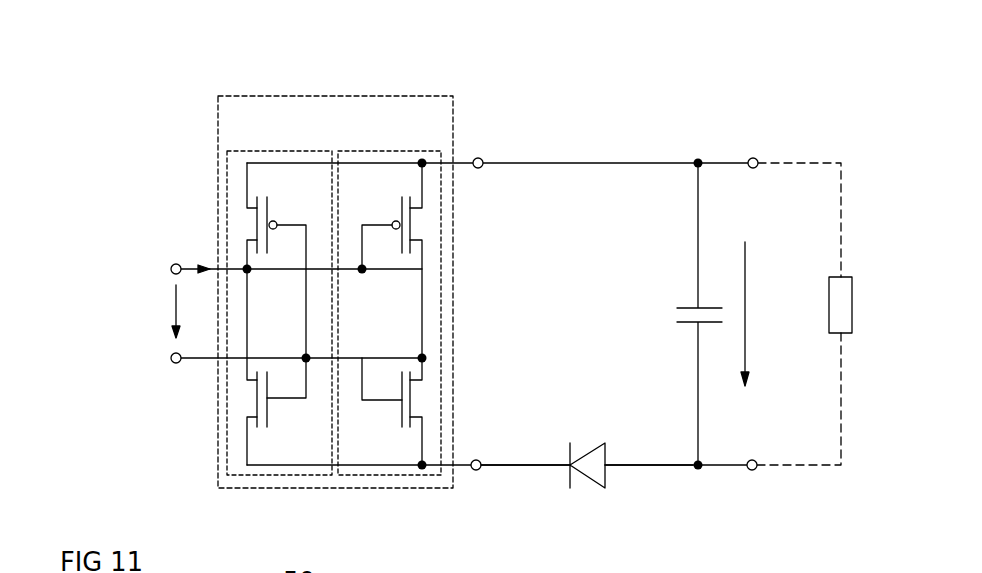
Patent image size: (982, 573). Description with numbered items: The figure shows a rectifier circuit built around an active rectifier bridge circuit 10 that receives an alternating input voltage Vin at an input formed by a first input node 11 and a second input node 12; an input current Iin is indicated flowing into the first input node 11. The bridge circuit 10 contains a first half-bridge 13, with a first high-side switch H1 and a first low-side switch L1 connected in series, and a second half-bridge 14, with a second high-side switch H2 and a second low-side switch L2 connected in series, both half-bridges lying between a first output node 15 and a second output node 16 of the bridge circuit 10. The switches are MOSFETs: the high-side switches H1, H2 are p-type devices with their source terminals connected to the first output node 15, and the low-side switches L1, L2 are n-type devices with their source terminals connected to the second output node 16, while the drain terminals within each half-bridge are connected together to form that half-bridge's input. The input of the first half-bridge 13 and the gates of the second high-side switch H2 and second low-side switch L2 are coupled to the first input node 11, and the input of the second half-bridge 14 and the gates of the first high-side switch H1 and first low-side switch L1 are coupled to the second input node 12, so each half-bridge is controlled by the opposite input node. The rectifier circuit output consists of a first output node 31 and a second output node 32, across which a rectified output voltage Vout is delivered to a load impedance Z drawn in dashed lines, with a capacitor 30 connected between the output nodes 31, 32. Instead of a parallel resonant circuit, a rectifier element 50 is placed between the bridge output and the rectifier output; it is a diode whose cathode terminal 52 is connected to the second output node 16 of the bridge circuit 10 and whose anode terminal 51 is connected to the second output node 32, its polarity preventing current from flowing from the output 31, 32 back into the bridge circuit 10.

The bridge circuit 10 is at (338, 96).
The first input node 11 is at (175, 262).
The second input node 12 is at (175, 370).
The first half-bridge 13 is at (283, 151).
The second half-bridge 14 is at (385, 151).
The first output node 15 is at (478, 157).
The second output node 16 is at (479, 473).
The capacitor 30 is at (672, 314).
The first output node 31 is at (755, 156).
The second output node 32 is at (756, 472).
The rectifier element 50 is at (577, 444).
The anode terminal 51 is at (617, 456).
The cathode terminal 52 is at (548, 458).
The first high-side switch H1 is at (270, 205).
The second high-side switch H2 is at (394, 204).
The first low-side switch L1 is at (272, 410).
The second low-side switch L2 is at (396, 421).
The load impedance Z is at (856, 312).
The alternating input voltage Vin is at (154, 311).
The rectified output voltage Vout is at (772, 314).
The input current Iin is at (301, 257).